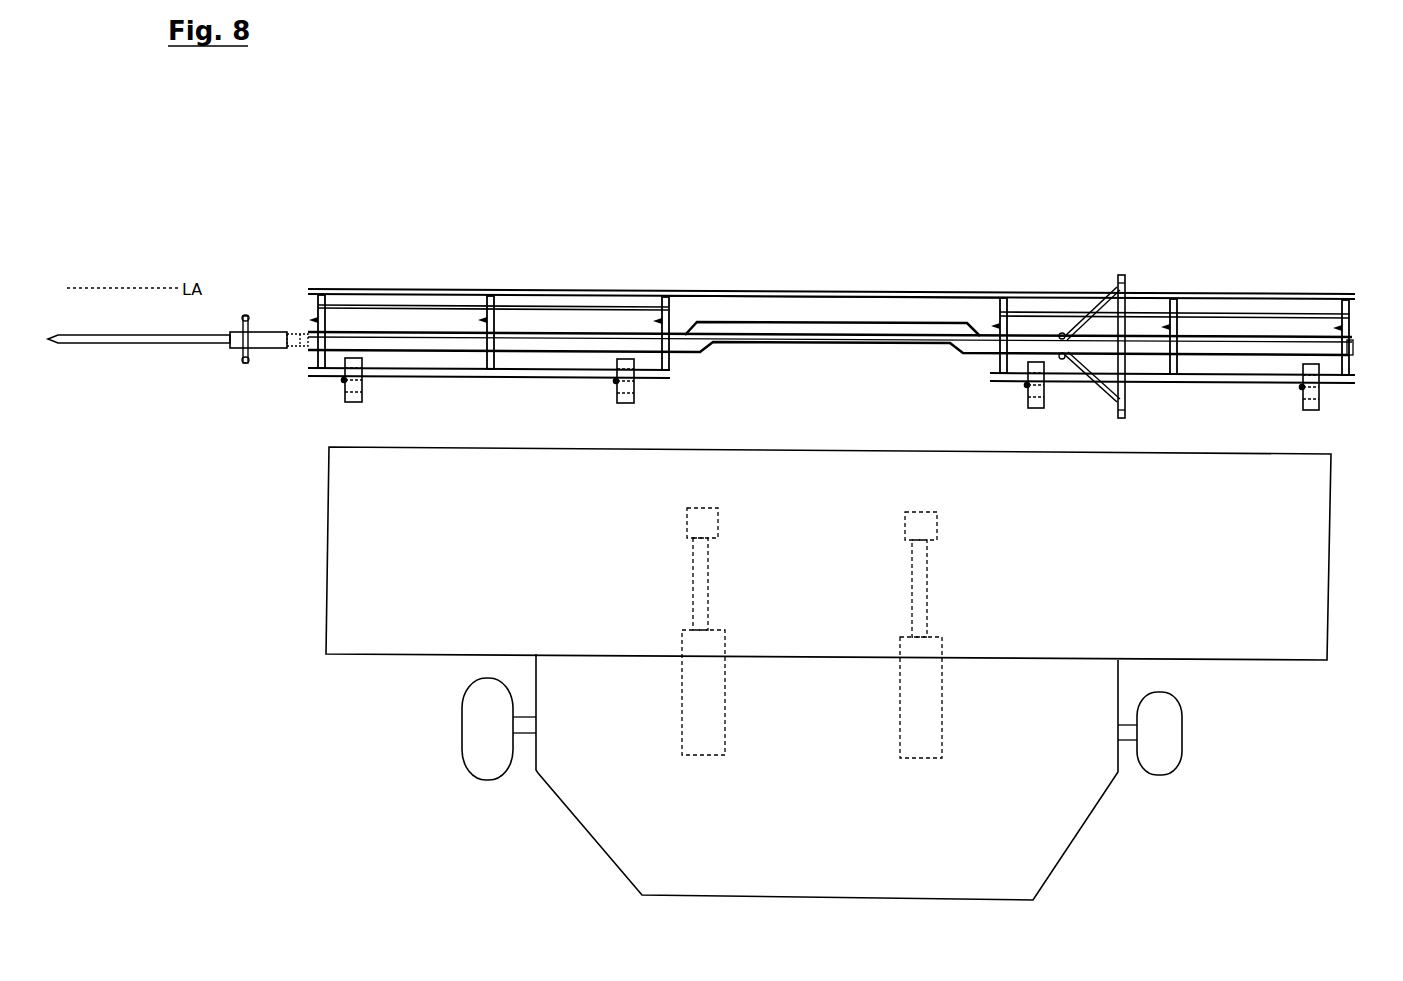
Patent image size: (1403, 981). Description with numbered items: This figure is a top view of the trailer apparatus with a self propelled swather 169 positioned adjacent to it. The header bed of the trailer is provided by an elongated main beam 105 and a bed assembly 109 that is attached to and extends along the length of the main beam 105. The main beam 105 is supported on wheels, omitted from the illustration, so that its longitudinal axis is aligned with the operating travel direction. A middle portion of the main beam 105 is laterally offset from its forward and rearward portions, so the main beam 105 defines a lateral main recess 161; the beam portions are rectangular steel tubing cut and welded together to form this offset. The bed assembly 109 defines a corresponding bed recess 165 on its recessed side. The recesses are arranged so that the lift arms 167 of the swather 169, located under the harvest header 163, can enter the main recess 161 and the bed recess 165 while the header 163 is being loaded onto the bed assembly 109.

The main beam 105 is at (553, 292).
The bed assembly 109 is at (318, 378).
The main recess 161 is at (794, 344).
The harvest header 163 is at (1331, 529).
The bed recess 165 is at (742, 400).
The lift arms 167 is at (926, 604).
The self propelled swather 169 is at (1076, 849).